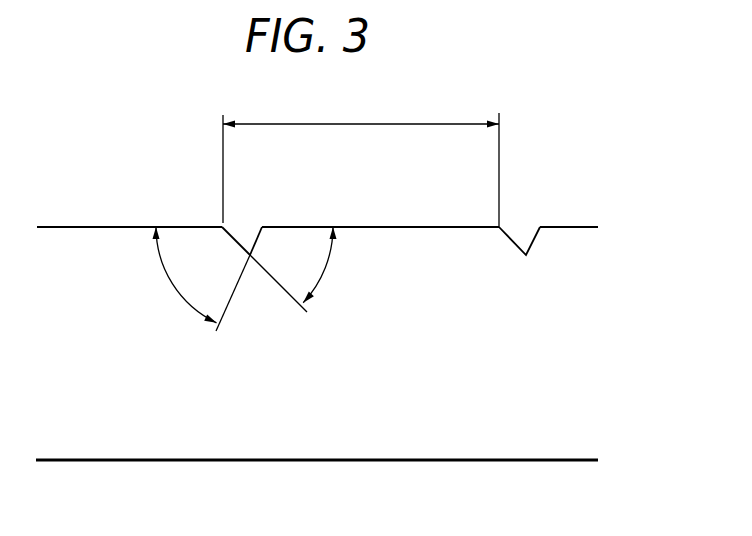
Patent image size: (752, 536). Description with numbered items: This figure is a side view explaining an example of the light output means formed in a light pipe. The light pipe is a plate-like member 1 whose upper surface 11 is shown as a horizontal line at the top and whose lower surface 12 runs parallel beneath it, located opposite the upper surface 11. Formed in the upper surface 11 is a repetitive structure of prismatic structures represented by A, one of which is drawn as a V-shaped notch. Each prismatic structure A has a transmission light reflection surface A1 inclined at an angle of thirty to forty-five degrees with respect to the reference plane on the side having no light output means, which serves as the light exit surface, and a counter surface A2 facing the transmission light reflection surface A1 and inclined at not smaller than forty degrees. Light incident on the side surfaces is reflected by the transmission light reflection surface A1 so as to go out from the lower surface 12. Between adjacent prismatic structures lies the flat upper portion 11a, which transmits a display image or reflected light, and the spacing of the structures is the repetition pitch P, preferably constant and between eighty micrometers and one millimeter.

The plate-like member 1 is at (186, 208).
The upper surface 11 is at (88, 227).
The upper portion 11a is at (420, 227).
The lower surface 12 is at (192, 462).
The prismatic structure A is at (297, 170).
The transmission light reflection surface A1 is at (232, 238).
The counter surface A2 is at (250, 237).
The repetition pitch P is at (361, 163).